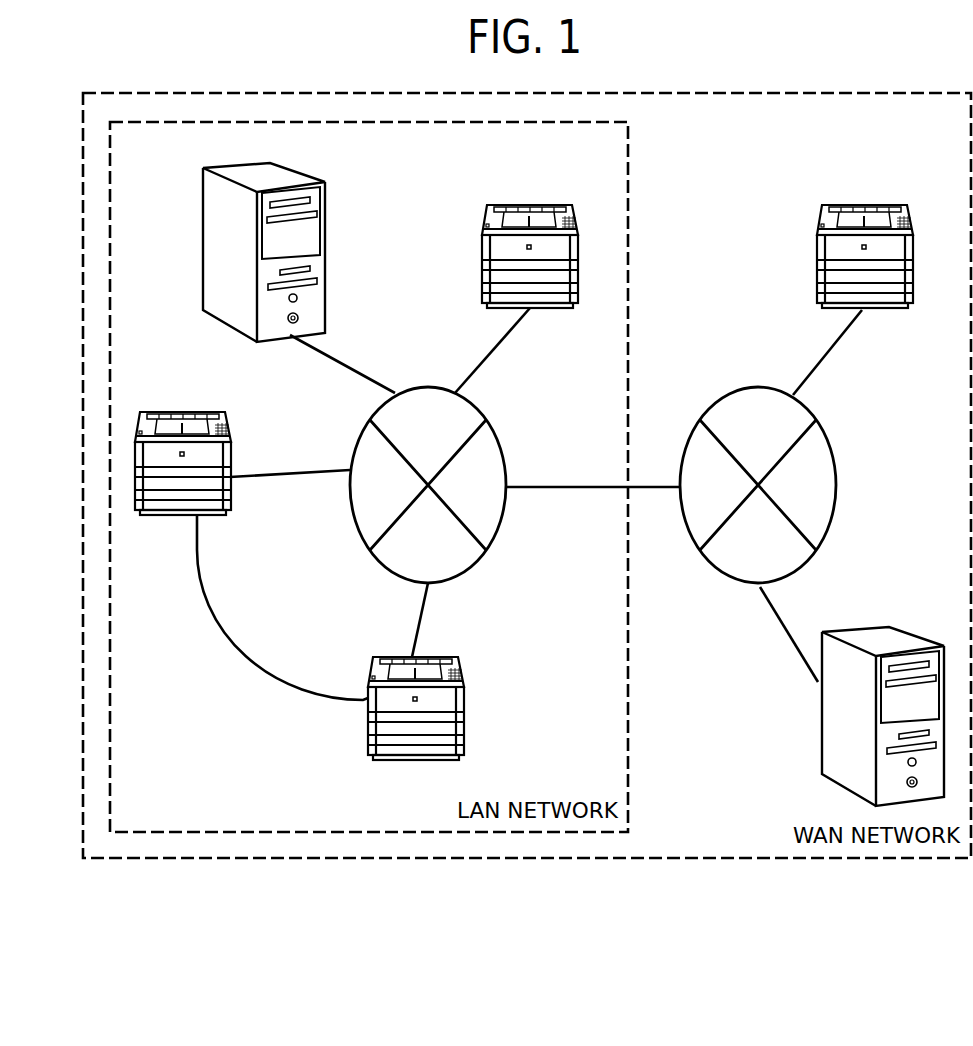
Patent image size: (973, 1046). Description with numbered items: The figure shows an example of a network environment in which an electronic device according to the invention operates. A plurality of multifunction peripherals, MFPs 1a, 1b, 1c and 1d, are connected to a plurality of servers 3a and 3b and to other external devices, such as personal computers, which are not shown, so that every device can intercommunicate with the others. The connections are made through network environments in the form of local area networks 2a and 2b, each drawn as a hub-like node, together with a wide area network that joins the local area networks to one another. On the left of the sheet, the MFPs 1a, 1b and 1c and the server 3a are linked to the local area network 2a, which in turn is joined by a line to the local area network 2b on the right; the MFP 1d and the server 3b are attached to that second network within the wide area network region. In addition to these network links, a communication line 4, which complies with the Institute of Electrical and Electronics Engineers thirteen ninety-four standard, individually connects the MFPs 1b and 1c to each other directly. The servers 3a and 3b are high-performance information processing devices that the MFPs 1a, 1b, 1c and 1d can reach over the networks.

The MFP 1a is at (535, 204).
The MFP 1b is at (190, 412).
The MFP 1c is at (465, 703).
The MFP 1d is at (870, 205).
The local area network 2a is at (503, 452).
The local area network 2b is at (833, 452).
The server 3a is at (325, 222).
The server 3b is at (822, 717).
The communication line 4 is at (280, 680).